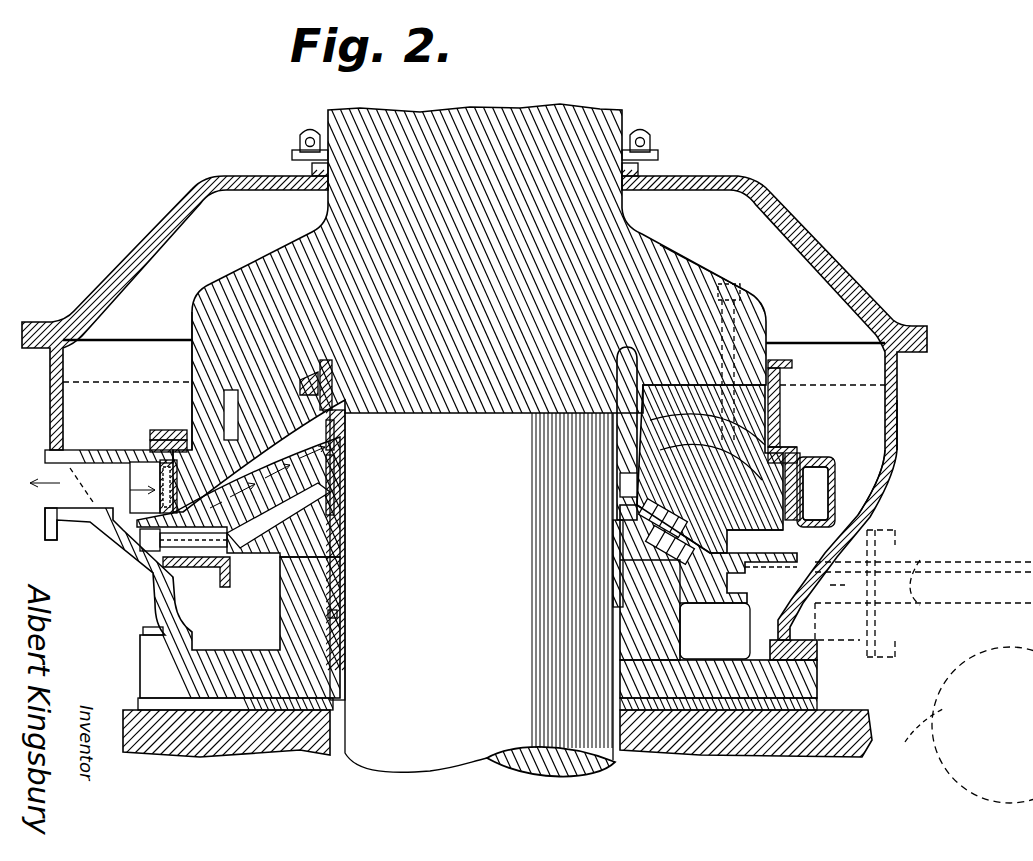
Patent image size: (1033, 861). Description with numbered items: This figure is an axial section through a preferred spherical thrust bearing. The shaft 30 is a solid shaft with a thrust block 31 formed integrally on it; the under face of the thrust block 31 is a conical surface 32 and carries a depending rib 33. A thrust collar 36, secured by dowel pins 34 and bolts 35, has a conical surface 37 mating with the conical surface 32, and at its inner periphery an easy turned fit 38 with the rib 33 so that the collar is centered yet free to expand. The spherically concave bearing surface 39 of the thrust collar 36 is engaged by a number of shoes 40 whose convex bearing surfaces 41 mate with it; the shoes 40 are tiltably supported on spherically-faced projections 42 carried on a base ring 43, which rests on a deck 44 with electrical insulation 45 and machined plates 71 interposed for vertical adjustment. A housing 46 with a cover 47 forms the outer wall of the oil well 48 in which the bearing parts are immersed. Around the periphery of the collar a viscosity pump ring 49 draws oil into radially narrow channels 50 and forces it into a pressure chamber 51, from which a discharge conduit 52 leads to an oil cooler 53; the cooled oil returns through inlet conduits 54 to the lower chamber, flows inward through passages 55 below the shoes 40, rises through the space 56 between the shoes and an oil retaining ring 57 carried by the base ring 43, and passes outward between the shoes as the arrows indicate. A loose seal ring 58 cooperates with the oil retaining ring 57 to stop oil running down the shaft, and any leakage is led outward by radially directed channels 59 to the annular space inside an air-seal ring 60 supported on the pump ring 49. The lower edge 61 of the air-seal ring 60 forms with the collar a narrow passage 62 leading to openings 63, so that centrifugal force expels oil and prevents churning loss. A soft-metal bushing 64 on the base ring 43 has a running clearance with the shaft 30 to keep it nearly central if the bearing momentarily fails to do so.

The shaft 30 is at (570, 125).
The thrust block 31 is at (672, 262).
The conical surface 32 is at (711, 421).
The depending rib 33 is at (640, 400).
The dowel pins 34 is at (190, 345).
The bolts 35 is at (742, 290).
The thrust collar 36 is at (775, 447).
The conical surface 37 is at (304, 372).
The turned fit 38 is at (312, 372).
The bearing surface 39 is at (787, 437).
The shoes 40 is at (783, 537).
The bearing surfaces 41 is at (822, 490).
The spherically-faced projections 42 is at (652, 520).
The base ring 43 is at (647, 592).
The deck 44 is at (630, 720).
The electrical insulation 45 is at (780, 702).
The housing 46 is at (887, 448).
The cover 47 is at (775, 197).
The oil well 48 is at (882, 420).
The viscosity pump ring 49 is at (818, 457).
The radially narrow channels 50 is at (813, 460).
The pressure chamber 51 is at (824, 500).
The discharge conduit 52 is at (96, 470).
The oil cooler 53 is at (578, 725).
The inlet conduits 54 is at (905, 568).
The passages 55 is at (255, 580).
The space 56 is at (346, 455).
The oil retaining ring 57 is at (346, 478).
The loose seal ring 58 is at (600, 436).
The radially directed channels 59 is at (798, 386).
The air-seal ring 60 is at (782, 353).
The lower edge 61 is at (168, 412).
The narrow passage 62 is at (165, 386).
The openings 63 is at (152, 448).
The bushing 64 is at (345, 655).
The machined plates 71 is at (200, 698).